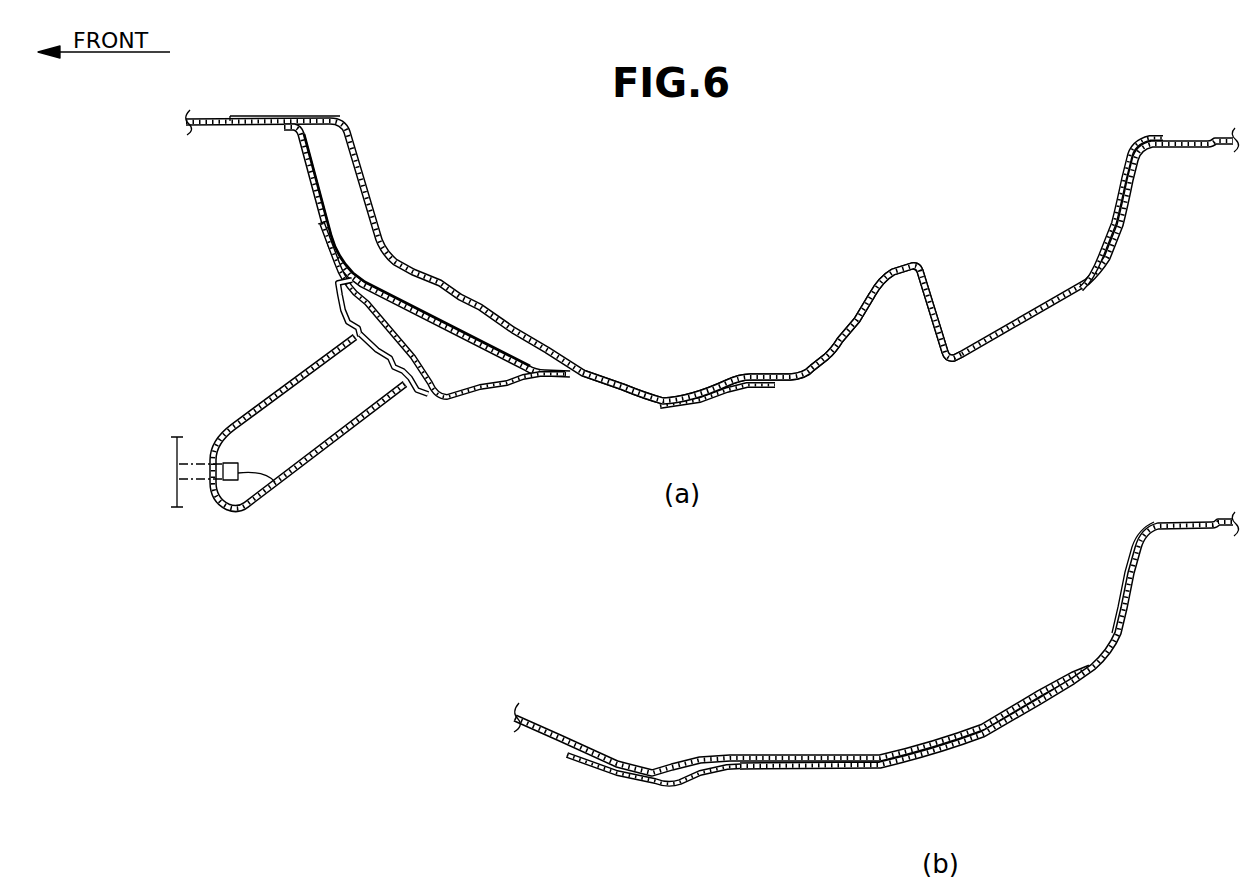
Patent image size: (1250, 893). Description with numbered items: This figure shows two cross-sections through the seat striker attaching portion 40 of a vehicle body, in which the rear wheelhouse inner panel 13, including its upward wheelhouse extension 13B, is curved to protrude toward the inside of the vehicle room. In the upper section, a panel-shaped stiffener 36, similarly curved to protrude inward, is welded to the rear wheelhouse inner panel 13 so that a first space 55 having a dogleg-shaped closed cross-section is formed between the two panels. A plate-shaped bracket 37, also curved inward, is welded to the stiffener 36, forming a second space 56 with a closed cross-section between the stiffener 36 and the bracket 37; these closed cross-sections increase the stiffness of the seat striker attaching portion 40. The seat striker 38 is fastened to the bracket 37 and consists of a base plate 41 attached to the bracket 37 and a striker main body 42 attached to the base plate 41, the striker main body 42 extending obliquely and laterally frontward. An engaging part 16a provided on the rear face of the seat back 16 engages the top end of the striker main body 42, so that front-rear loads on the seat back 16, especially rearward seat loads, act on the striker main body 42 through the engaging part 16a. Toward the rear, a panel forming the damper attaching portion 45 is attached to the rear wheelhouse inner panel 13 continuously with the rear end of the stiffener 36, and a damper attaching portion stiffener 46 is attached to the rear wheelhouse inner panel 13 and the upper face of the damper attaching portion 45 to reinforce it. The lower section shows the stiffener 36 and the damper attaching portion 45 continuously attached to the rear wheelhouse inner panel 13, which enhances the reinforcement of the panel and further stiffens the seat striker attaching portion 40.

The rear wheelhouse inner panel 13 is at (488, 303).
The wheelhouse extension 13B is at (587, 369).
The seat back 16 is at (183, 490).
The engaging part 16a is at (275, 482).
The stiffener 36 is at (313, 181).
The bracket 37 is at (475, 400).
The seat striker 38 is at (279, 421).
The seat striker attaching portion 40 is at (228, 309).
The base plate 41 is at (341, 300).
The striker main body 42 is at (337, 433).
The damper attaching portion 45 is at (990, 744).
The damper attaching portion stiffener 46 is at (899, 263).
The first space 55 is at (345, 203).
The second space 56 is at (466, 367).